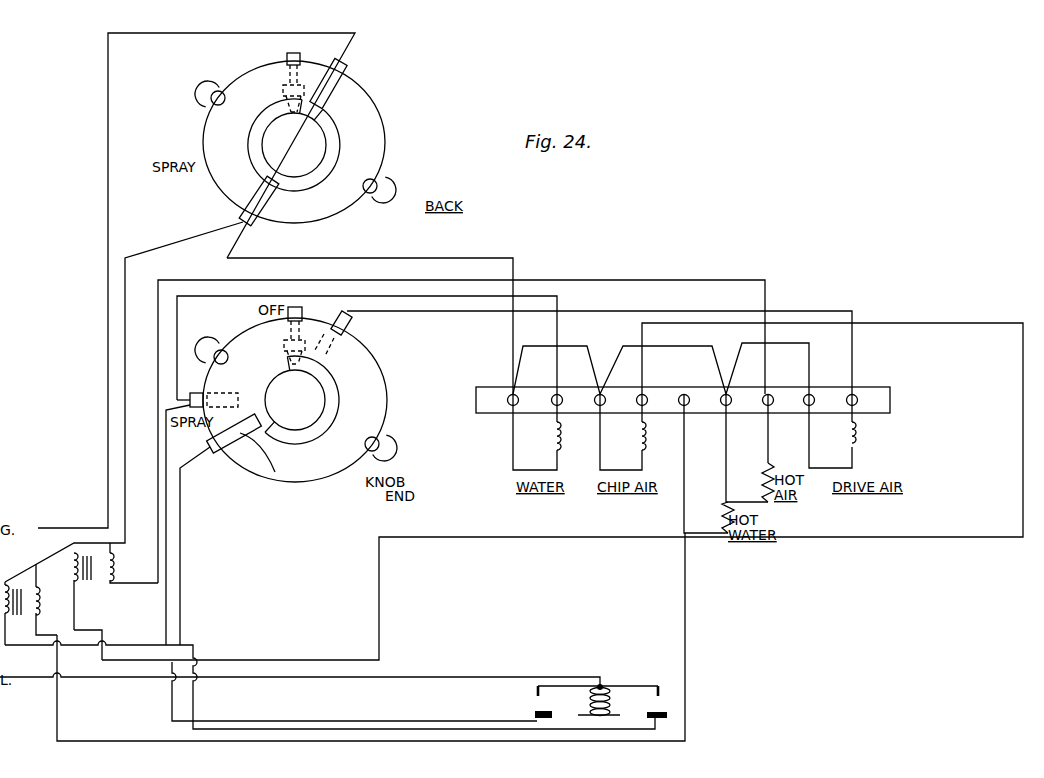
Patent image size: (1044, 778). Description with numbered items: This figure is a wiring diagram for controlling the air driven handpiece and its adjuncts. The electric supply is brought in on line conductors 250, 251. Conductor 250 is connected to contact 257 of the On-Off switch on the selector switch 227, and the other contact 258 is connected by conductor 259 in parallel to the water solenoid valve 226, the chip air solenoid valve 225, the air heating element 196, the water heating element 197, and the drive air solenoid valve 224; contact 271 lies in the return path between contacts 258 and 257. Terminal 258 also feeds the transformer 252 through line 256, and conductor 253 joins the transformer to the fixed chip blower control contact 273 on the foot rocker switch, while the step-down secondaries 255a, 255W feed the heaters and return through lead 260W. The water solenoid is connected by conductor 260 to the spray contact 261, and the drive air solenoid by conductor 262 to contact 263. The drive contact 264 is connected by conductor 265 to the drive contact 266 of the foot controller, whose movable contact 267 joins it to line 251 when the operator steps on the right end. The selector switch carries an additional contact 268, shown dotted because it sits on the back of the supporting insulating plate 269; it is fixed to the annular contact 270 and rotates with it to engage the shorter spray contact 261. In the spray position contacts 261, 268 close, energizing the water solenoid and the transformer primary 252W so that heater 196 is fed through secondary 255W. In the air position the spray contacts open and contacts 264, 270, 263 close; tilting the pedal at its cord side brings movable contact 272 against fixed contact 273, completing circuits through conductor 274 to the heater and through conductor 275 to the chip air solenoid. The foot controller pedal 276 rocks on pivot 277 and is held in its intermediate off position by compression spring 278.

The air heating element 196 is at (724, 512).
The water heating element 197 is at (750, 448).
The drive air solenoid valve 224 is at (857, 432).
The chip air solenoid valve 225 is at (638, 440).
The water solenoid valve 226 is at (553, 440).
The selector switch 227 is at (385, 116).
The line conductor 250 is at (108, 202).
The line conductor 251 is at (37, 678).
The transformer 252 is at (57, 599).
The transformer primary 252W is at (3, 565).
The conductor 253 is at (82, 624).
The transformer secondary 255W is at (76, 598).
The transformer secondary 255a is at (114, 575).
The line 256 is at (125, 478).
The contact 257 is at (348, 70).
The contact 258 is at (265, 215).
The conductor 259 is at (430, 258).
The conductor 260 is at (177, 322).
The lead 260W is at (122, 741).
The spray contact 261 is at (222, 386).
The conductor 262 is at (808, 311).
The contact 263 is at (352, 322).
The drive contact 264 is at (268, 486).
The conductor 265 is at (312, 721).
The drive contact 266 is at (668, 718).
The movable contact 267 is at (672, 684).
The contact 268 is at (282, 350).
The supporting insulating plate 269 is at (370, 424).
The annular contact 270 is at (330, 388).
The contact 271 is at (333, 150).
The movable contact 272 is at (536, 691).
The fixed chip blower control contact 273 is at (534, 716).
The conductor 274 is at (405, 729).
The conductor 275 is at (936, 323).
The foot controller pedal 276 is at (572, 686).
The pivot 277 is at (602, 686).
The compression spring 278 is at (611, 712).